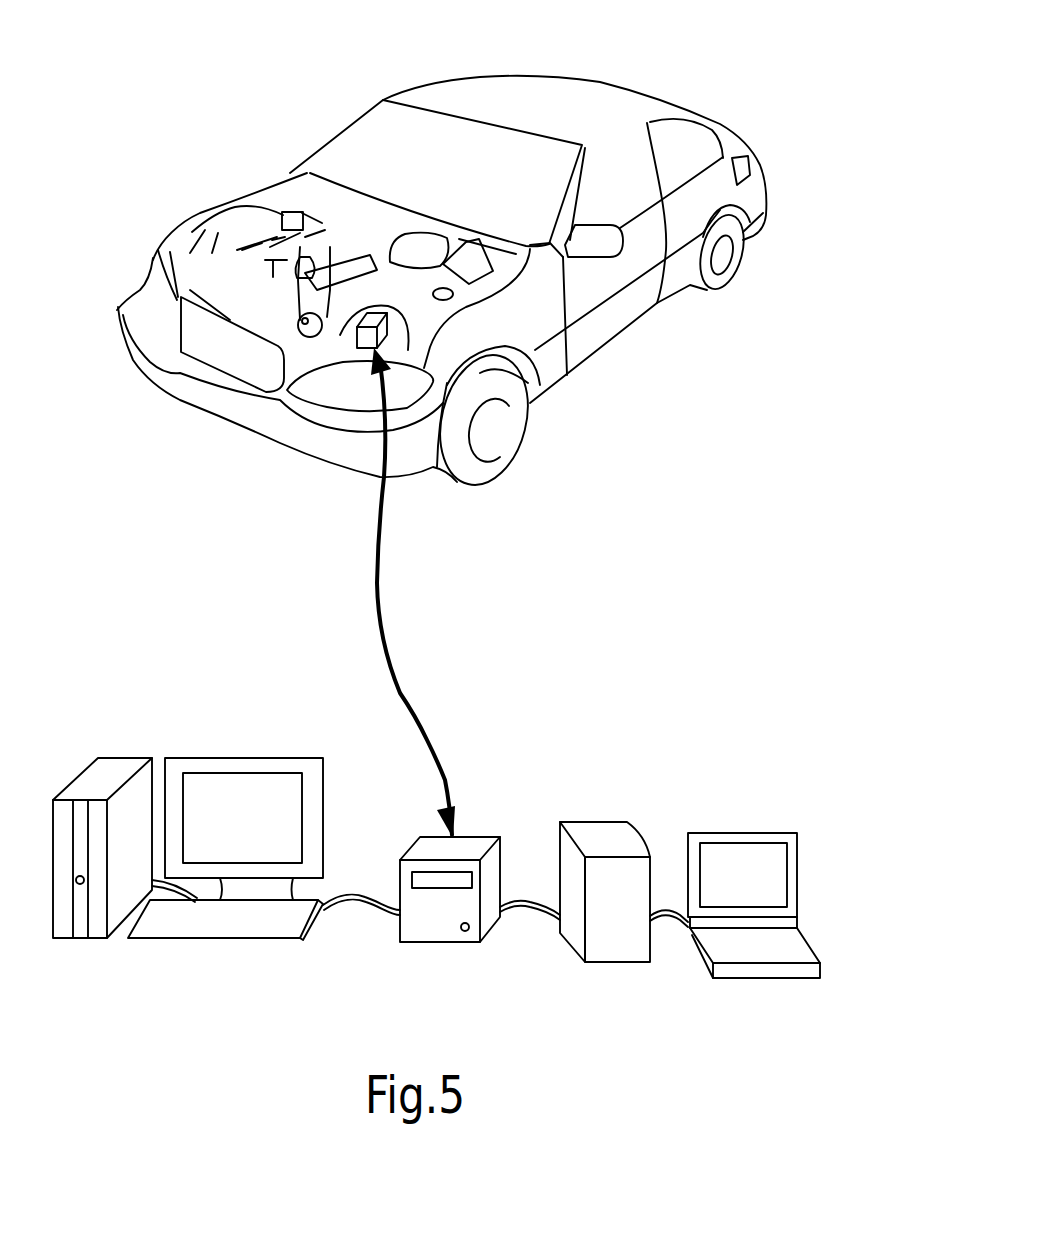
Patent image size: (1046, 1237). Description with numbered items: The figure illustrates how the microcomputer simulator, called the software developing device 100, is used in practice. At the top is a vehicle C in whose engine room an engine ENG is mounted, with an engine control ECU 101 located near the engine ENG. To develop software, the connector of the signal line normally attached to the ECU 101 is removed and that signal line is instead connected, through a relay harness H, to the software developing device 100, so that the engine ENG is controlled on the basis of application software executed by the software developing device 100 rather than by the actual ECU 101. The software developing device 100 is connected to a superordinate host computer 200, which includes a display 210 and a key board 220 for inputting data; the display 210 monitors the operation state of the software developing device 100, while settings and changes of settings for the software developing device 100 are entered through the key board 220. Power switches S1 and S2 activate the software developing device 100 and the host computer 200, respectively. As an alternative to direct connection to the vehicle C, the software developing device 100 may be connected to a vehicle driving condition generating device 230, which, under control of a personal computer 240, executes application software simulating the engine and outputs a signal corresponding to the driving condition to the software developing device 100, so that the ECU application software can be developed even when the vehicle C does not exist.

The vehicle C is at (417, 92).
The engine ENG is at (332, 267).
The engine control ECU 101 is at (352, 350).
The relay harness H is at (385, 628).
The software developing device 100 is at (473, 842).
The power switch S1 is at (462, 933).
The host computer 200 is at (122, 762).
The power switch S2 is at (82, 885).
The display 210 is at (243, 793).
The key board 220 is at (237, 925).
The vehicle driving condition generating device 230 is at (607, 827).
The personal computer 240 is at (747, 832).